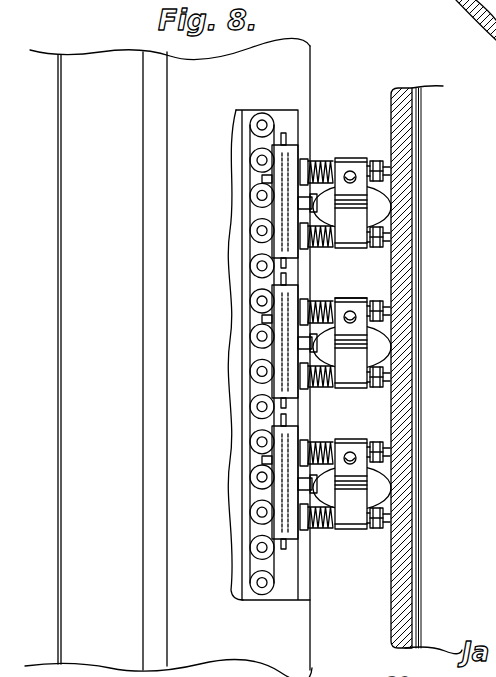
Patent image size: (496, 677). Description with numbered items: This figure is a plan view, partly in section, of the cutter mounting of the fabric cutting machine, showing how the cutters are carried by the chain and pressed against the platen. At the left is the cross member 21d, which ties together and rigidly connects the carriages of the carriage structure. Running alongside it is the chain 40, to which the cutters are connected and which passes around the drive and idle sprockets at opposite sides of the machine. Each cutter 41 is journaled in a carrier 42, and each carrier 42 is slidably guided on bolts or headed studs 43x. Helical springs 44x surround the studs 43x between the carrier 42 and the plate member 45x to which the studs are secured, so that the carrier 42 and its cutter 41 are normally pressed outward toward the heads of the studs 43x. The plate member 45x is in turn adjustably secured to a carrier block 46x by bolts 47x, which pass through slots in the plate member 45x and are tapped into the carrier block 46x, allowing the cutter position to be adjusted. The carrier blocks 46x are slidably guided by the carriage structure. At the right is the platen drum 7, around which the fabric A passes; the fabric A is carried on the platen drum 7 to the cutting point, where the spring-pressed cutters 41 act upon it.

The cross member 21d is at (168, 357).
The chain 40 is at (252, 458).
The cutter 41 is at (375, 198).
The carrier 42 is at (342, 299).
The bolt or headed stud 43x is at (377, 304).
The helical spring 44x is at (320, 447).
The plate member 45x is at (303, 440).
The carrier block 46x is at (287, 158).
The bolt 47x is at (308, 203).
The platen drum 7 is at (400, 146).
The fabric A is at (391, 128).